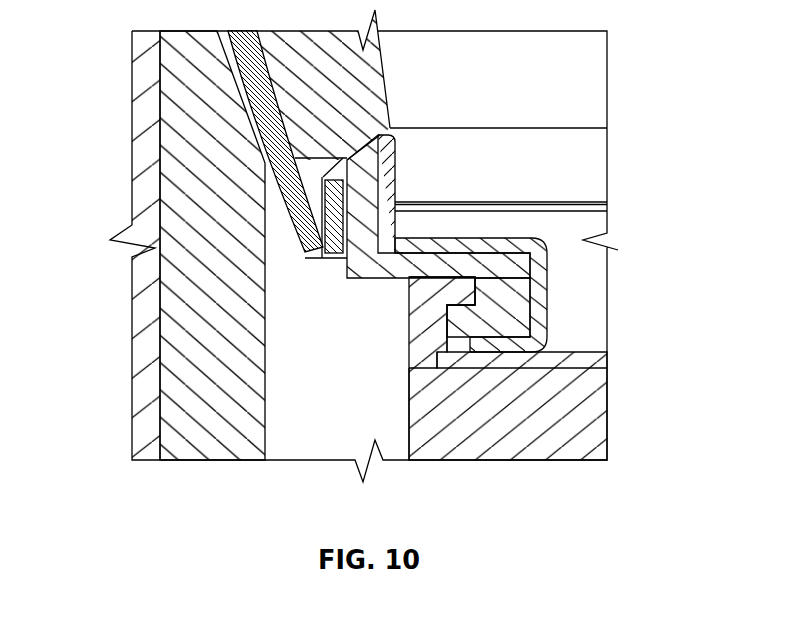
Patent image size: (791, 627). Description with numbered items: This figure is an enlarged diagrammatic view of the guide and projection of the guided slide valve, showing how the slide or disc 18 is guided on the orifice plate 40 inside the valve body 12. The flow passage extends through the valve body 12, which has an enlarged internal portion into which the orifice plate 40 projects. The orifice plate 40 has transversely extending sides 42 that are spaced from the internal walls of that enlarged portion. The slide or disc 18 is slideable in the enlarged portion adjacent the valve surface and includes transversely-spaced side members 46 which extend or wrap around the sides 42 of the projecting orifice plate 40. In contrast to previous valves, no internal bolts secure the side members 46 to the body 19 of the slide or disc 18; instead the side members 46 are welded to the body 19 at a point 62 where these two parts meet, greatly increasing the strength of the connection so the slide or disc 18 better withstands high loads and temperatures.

The valve body 12 is at (138, 323).
The slide or disc 18 is at (592, 430).
The body of the slide or disc 19 is at (427, 440).
The orifice plate 40 is at (365, 183).
The sides of the orifice plate 42 is at (467, 327).
The side members 46 is at (413, 317).
The weld point 62 is at (413, 370).